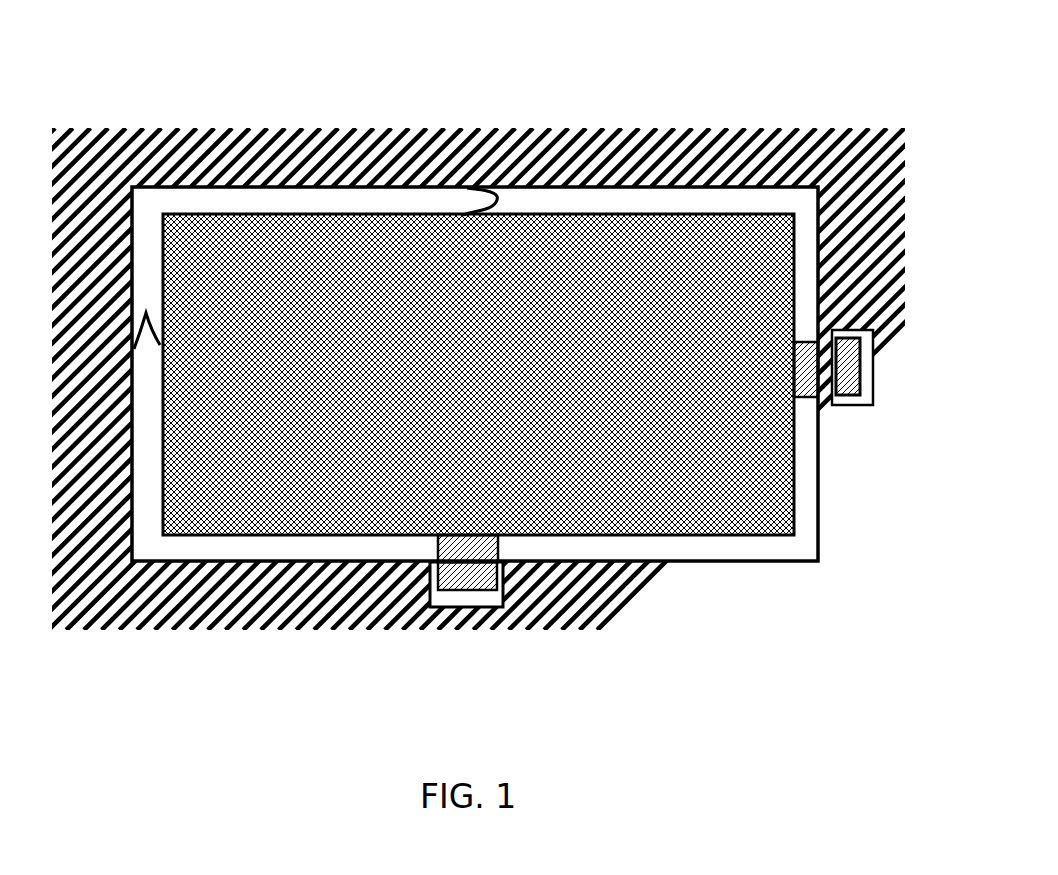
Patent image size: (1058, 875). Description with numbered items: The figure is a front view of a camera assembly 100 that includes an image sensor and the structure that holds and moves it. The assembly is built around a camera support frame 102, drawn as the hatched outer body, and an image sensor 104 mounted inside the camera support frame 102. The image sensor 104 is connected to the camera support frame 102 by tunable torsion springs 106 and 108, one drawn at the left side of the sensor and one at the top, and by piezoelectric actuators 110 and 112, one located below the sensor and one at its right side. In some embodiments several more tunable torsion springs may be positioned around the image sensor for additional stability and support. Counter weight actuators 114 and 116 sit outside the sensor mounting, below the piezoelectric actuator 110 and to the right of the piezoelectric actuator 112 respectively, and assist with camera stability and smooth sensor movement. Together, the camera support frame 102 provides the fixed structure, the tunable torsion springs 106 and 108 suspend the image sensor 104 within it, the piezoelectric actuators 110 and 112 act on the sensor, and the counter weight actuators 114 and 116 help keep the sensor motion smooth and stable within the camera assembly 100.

The camera assembly 100 is at (487, 736).
The camera support frame 102 is at (572, 128).
The image sensor 104 is at (712, 214).
The tunable torsion spring 106 is at (146, 313).
The tunable torsion spring 108 is at (498, 200).
The piezoelectric actuator 110 is at (498, 552).
The piezoelectric actuator 112 is at (802, 397).
The counter weight actuator 114 is at (482, 592).
The counter weight actuator 116 is at (870, 365).